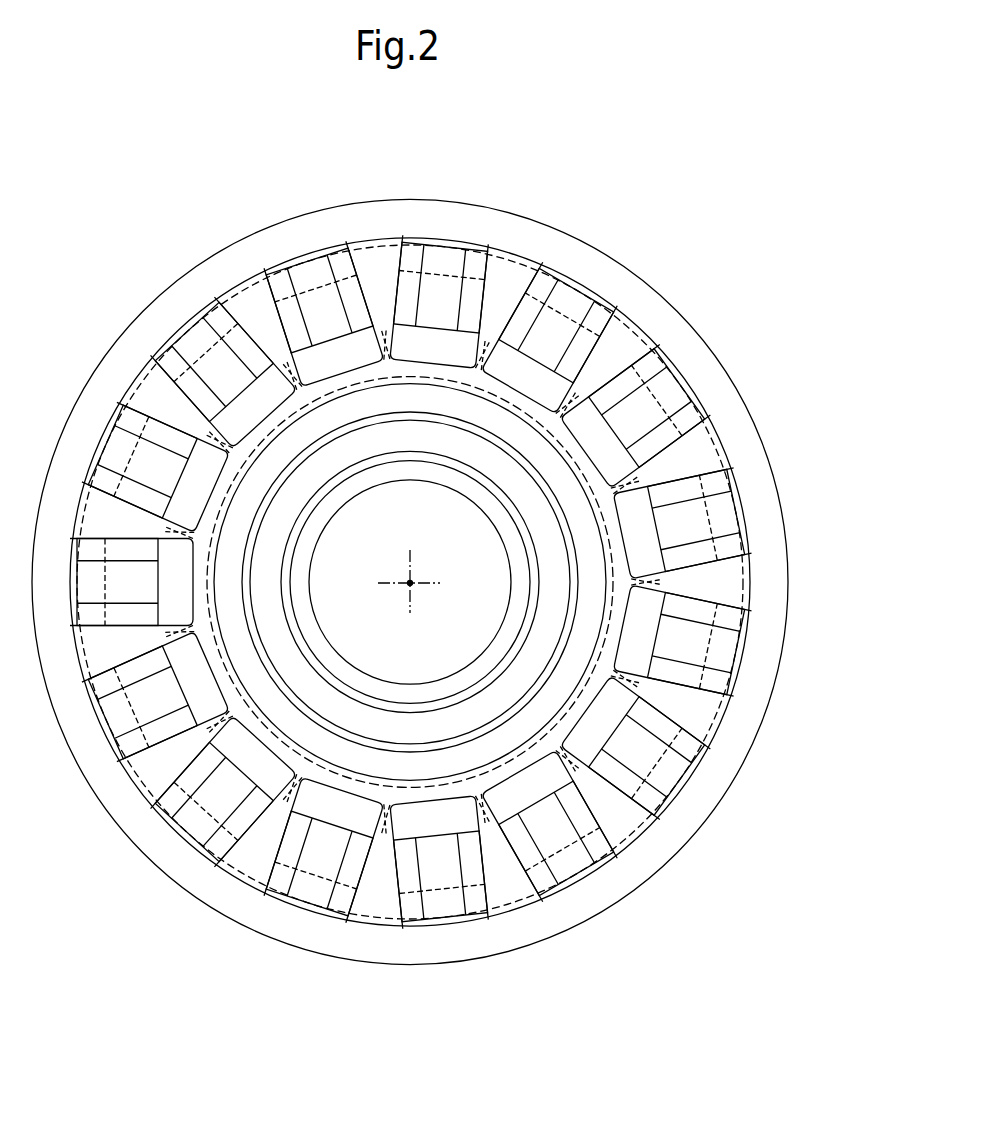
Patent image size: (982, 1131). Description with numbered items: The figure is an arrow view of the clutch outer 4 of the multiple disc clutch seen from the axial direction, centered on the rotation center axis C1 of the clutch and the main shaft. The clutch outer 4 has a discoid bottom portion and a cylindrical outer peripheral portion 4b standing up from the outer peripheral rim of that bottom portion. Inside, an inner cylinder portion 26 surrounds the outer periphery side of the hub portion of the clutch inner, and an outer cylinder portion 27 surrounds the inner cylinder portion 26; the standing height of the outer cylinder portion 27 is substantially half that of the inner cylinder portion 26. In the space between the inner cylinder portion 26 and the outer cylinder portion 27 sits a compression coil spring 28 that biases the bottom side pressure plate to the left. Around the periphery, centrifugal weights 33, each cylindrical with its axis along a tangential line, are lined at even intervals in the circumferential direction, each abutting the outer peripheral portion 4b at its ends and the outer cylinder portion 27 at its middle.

The clutch outer 4 is at (410, 544).
The outer peripheral portion 4b is at (610, 263).
The centrifugal weight 33 is at (312, 273).
The inner cylinder portion 26 is at (340, 457).
The outer cylinder portion 27 is at (268, 430).
The compression coil spring 28 is at (240, 525).
The rotation center axis C1 is at (412, 581).